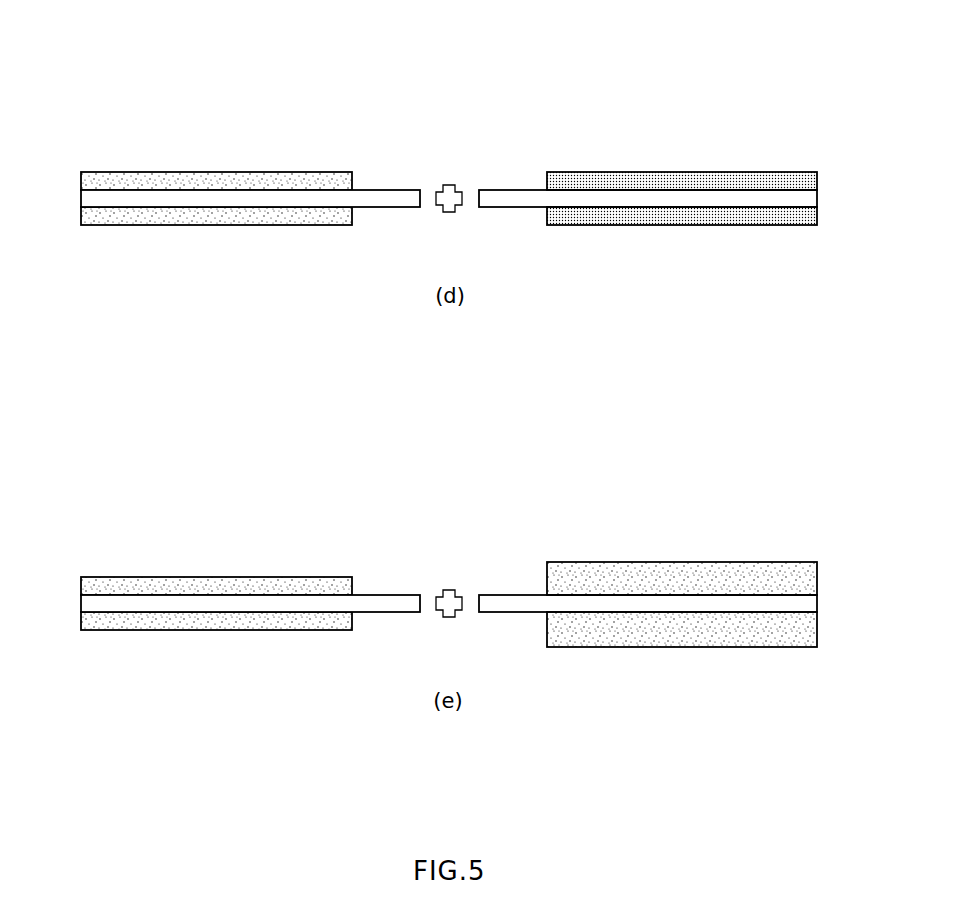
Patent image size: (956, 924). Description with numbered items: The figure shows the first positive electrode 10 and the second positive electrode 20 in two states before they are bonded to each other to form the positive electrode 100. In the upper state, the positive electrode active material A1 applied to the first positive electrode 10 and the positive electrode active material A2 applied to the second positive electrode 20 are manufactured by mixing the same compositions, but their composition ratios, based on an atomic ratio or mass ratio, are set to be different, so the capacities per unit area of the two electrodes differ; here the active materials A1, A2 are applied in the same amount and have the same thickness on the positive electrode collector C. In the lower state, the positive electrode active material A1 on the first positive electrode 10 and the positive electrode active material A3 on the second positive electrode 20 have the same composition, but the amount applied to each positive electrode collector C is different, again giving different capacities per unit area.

The first positive electrode 10 is at (290, 148).
The second positive electrode 20 is at (609, 148).
The positive electrode 100 is at (727, 95).
The positive electrode active material A1 is at (81, 180).
The positive electrode active material A2 is at (817, 180).
The positive electrode active material A3 is at (817, 578).
The positive electrode collector C is at (81, 198).